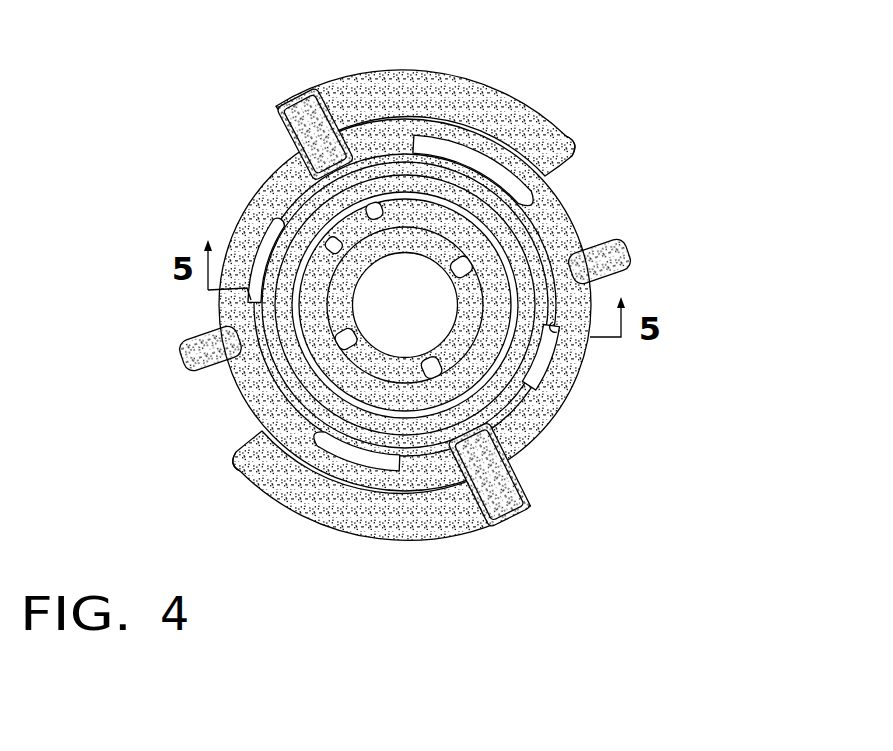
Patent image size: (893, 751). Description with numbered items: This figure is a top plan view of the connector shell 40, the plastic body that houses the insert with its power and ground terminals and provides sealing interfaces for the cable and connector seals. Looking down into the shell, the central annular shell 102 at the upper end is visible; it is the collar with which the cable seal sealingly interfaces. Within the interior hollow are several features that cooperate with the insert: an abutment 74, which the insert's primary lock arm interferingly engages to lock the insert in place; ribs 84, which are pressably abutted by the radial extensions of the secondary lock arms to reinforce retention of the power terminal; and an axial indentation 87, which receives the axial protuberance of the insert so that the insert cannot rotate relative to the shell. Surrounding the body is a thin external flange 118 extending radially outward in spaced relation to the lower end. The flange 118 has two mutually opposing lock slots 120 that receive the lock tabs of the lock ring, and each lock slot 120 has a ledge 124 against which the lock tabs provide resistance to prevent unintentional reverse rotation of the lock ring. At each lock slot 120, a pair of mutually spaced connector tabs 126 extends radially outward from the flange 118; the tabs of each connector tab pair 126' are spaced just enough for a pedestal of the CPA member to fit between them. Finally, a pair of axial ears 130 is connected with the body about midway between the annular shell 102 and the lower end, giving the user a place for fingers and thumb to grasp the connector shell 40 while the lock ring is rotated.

The connector shell 40 is at (690, 270).
The abutment 74 is at (456, 374).
The ribs 84 is at (472, 282).
The axial indentation 87 is at (372, 208).
The annular shell 102 is at (433, 445).
The external flange 118 is at (270, 173).
The lock slots 120 is at (531, 217).
The ledge 124 is at (252, 283).
The connector tabs 126 is at (410, 302).
The connector tab pair 126' is at (439, 303).
The axial ears 130 is at (280, 130).